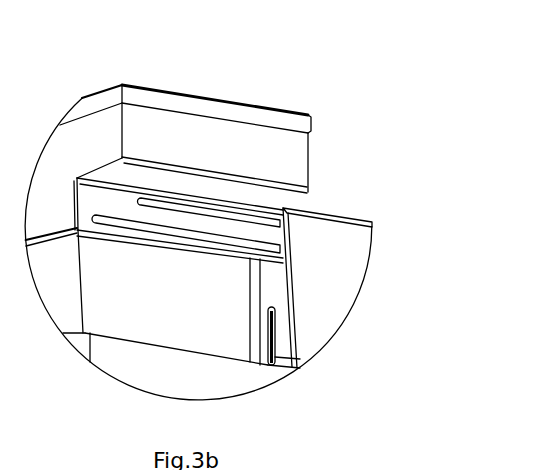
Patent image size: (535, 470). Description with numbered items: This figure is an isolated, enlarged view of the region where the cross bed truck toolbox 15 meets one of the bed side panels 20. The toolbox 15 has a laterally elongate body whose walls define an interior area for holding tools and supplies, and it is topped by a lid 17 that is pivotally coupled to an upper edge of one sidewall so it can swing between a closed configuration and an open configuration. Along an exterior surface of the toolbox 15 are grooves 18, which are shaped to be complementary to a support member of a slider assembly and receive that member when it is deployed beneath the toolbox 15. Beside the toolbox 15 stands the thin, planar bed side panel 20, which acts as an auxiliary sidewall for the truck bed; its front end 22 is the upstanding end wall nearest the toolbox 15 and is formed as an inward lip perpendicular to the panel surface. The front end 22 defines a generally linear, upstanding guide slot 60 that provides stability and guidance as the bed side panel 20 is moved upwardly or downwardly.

The cross bed truck toolbox 15 is at (316, 88).
The lid 17 is at (207, 100).
The grooves 18 is at (210, 233).
The bed side panel 20 is at (345, 268).
The front end 22 is at (280, 289).
The guide slot 60 is at (275, 352).